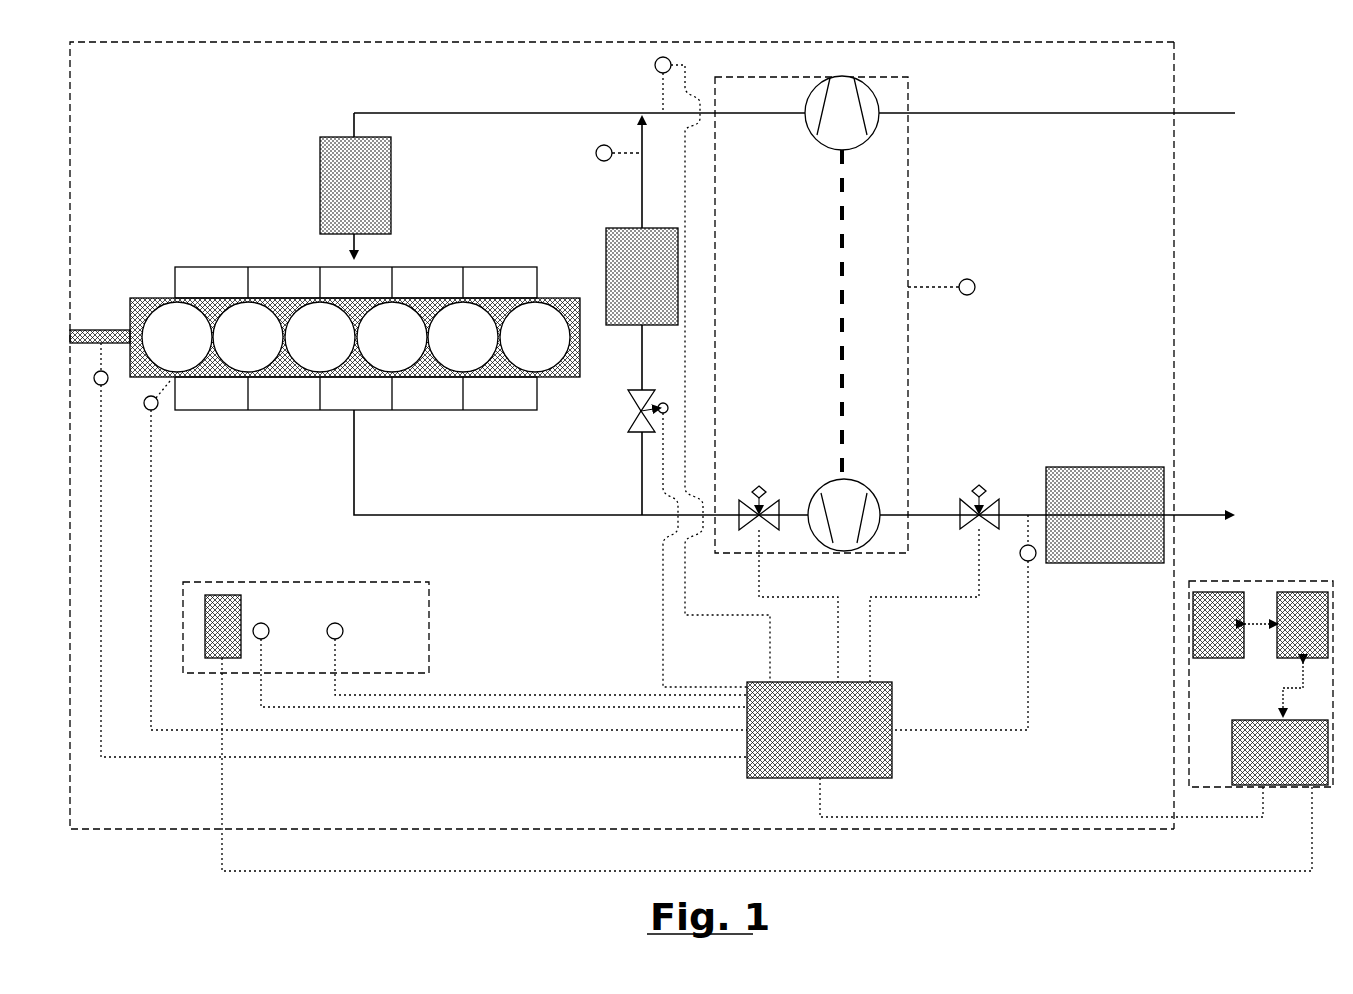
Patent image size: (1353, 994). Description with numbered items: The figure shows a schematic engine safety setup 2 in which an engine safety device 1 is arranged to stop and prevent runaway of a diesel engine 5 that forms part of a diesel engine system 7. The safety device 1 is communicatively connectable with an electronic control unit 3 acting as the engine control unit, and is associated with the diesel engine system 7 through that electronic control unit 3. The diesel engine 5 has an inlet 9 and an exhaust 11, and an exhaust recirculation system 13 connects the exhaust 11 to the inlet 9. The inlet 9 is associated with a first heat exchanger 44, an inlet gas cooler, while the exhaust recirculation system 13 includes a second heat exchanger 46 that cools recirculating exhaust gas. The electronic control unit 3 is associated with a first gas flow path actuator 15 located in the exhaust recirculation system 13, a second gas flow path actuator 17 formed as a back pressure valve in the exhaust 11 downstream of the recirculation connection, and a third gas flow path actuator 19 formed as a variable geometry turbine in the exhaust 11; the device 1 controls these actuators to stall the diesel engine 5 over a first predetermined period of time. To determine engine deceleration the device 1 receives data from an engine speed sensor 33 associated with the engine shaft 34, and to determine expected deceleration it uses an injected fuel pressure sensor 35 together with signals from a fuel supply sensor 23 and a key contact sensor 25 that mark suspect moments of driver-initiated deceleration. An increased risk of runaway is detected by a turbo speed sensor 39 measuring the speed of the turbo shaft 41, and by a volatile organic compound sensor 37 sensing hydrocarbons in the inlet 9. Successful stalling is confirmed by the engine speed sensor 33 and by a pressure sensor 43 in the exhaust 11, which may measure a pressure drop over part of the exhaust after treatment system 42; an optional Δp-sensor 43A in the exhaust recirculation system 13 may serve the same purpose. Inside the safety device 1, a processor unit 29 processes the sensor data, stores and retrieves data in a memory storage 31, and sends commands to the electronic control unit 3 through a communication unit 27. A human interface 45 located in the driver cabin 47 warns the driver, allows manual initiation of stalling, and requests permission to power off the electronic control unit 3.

The engine safety device 1 is at (1276, 580).
The engine safety setup 2 is at (1237, 66).
The electronic control unit 3 is at (893, 705).
The diesel engine 5 is at (134, 295).
The diesel engine system 7 is at (1176, 178).
The inlet 9 is at (1045, 117).
The exhaust 11 is at (1028, 512).
The exhaust recirculation system 13 is at (640, 204).
The first gas flow path actuator 15 is at (640, 413).
The second gas flow path actuator 17 is at (976, 488).
The third gas flow path actuator 19 is at (762, 488).
The fuel supply sensor 23 is at (267, 626).
The key contact sensor 25 is at (341, 626).
The communication unit 27 is at (1234, 765).
The processor unit 29 is at (1218, 658).
The memory storage 31 is at (1278, 657).
The engine speed sensor 33 is at (106, 385).
The engine shaft 34 is at (98, 328).
The injected fuel pressure sensor 35 is at (156, 409).
The volatile organic compound sensor 37 is at (655, 66).
The turbo speed sensor 39 is at (973, 282).
The turbo shaft 41 is at (845, 230).
The exhaust after treatment system 42 is at (908, 197).
The pressure sensor 43 is at (1034, 559).
The Δp-sensor 43A is at (596, 152).
The first heat exchanger 44 is at (318, 187).
The human interface 45 is at (232, 596).
The second heat exchanger 46 is at (606, 285).
The driver cabin 47 is at (430, 583).